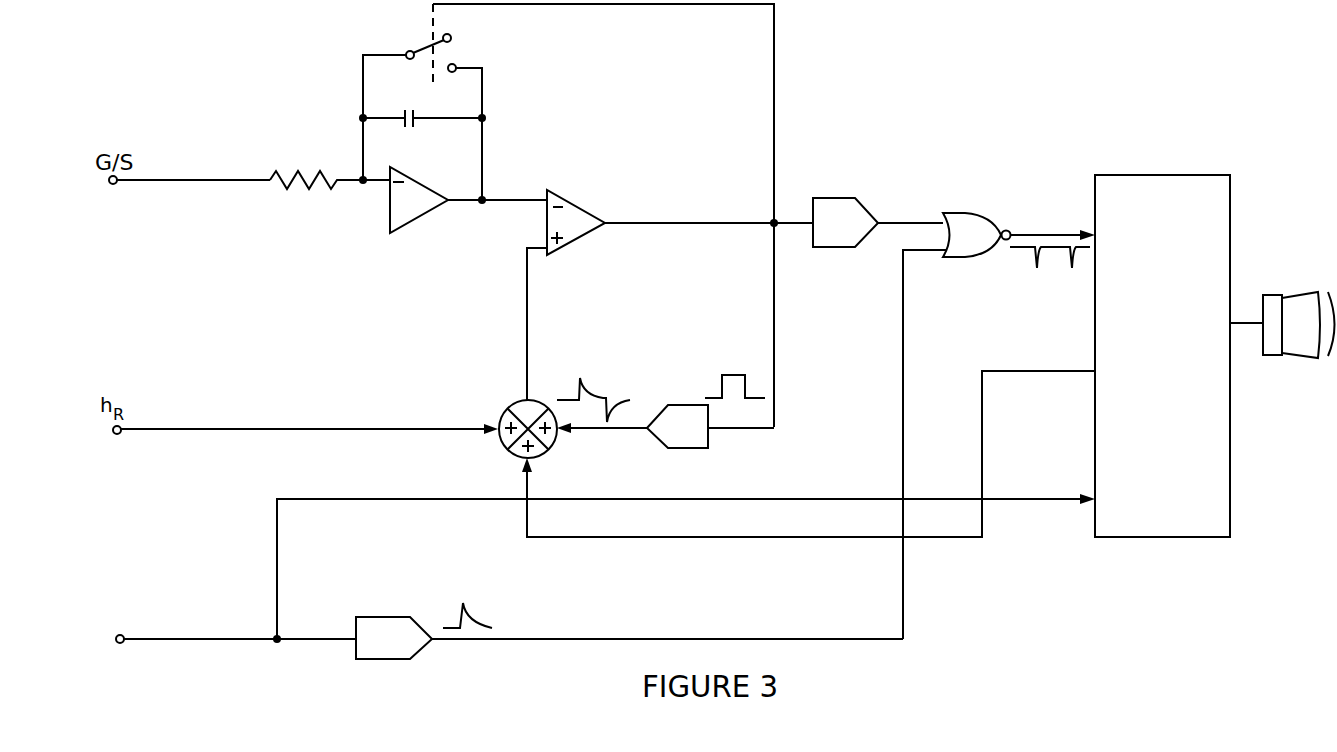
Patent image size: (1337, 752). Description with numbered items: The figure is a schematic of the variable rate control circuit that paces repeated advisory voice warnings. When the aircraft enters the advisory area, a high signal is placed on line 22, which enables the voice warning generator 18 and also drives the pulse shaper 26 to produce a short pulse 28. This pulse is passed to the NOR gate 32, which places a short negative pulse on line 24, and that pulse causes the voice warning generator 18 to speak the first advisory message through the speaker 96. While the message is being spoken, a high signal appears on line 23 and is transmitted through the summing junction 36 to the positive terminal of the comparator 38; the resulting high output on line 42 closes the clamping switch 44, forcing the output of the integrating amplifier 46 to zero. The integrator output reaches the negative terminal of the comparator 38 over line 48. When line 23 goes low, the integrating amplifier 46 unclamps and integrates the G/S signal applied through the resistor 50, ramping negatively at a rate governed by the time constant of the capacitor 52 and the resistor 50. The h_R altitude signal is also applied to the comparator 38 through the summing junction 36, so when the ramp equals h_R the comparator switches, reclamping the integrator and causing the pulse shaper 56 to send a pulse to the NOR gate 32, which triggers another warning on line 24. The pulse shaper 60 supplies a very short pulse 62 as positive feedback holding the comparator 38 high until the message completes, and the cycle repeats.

The voice warning generator 18 is at (1220, 175).
The line 22 is at (276, 636).
The line 23 is at (999, 371).
The line 24 is at (1029, 233).
The pulse shaper 26 is at (379, 617).
The short pulse 28 is at (466, 615).
The NOR gate 32 is at (963, 213).
The summing junction 36 is at (511, 398).
The comparator 38 is at (572, 197).
The line 42 is at (665, 223).
The clamping switch 44 is at (445, 52).
The integrating amplifier 46 is at (428, 216).
The line 48 is at (504, 198).
The resistor 50 is at (308, 191).
The capacitor 52 is at (412, 122).
The pulse shaper 56 is at (813, 197).
The pulse shaper 60 is at (688, 456).
The short pulse 62 is at (582, 379).
The speaker 96 is at (1301, 293).